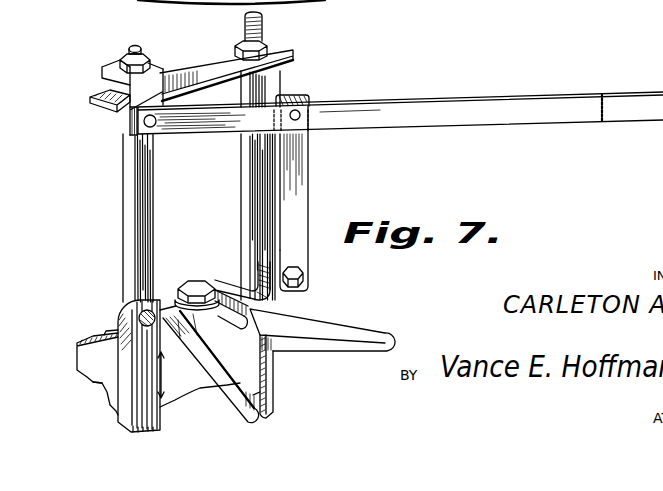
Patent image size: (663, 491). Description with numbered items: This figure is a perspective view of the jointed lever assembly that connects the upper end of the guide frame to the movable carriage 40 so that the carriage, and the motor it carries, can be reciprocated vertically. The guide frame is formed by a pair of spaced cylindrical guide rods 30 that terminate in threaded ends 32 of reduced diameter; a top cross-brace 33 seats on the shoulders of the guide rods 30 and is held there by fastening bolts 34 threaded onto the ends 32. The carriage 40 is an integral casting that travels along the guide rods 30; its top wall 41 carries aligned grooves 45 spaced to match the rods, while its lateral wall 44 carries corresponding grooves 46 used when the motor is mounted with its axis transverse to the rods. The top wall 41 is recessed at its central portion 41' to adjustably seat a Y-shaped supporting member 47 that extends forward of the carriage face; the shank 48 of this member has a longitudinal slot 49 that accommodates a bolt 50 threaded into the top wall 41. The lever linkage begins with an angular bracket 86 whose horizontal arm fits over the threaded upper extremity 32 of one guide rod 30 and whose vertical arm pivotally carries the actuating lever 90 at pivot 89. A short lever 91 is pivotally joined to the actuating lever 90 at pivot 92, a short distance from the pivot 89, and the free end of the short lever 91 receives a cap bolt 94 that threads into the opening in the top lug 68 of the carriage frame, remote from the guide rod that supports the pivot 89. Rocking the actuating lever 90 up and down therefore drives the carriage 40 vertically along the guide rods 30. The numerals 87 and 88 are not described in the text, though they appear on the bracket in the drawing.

The guide rods 30 is at (130, 202).
The threaded ends 32 is at (245, 25).
The top cross-brace 33 is at (185, 68).
The fastening bolts 34 is at (267, 50).
The carriage 40 is at (198, 385).
The top wall 41 is at (177, 356).
The central portion 41' is at (211, 367).
The lateral wall 44 is at (87, 355).
The grooves 45 is at (113, 335).
The grooves 46 is at (106, 393).
The Y-shaped supporting member 47 is at (340, 328).
The shank 48 is at (225, 287).
The longitudinal slot 49 is at (238, 329).
The bolt 50 is at (194, 280).
The top lug 68 is at (128, 306).
The angular bracket 86 is at (115, 68).
The bracket shelf 87 is at (120, 61).
The bracket leg 88 is at (140, 98).
The pivot 89 is at (132, 135).
The actuating lever 90 is at (463, 118).
The short lever 91 is at (300, 207).
The pivot 92 is at (300, 112).
The cap bolt 94 is at (303, 278).